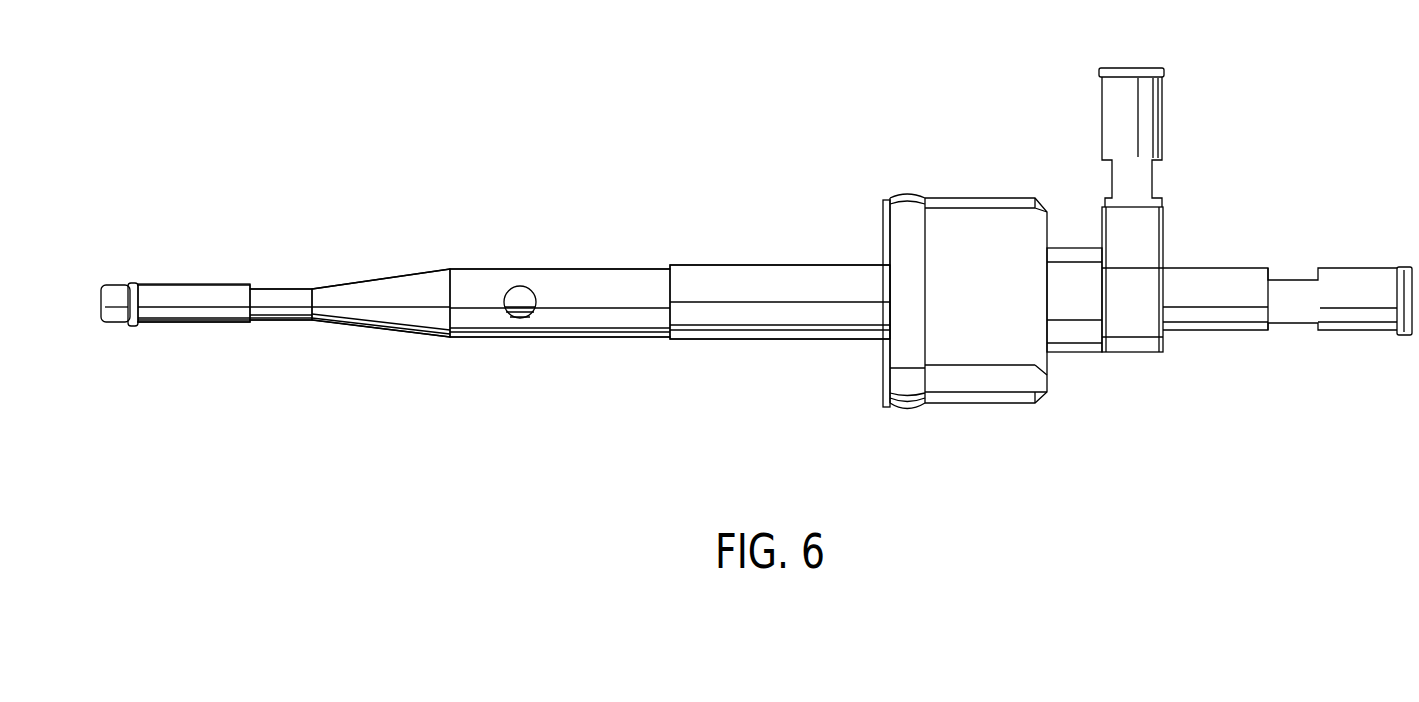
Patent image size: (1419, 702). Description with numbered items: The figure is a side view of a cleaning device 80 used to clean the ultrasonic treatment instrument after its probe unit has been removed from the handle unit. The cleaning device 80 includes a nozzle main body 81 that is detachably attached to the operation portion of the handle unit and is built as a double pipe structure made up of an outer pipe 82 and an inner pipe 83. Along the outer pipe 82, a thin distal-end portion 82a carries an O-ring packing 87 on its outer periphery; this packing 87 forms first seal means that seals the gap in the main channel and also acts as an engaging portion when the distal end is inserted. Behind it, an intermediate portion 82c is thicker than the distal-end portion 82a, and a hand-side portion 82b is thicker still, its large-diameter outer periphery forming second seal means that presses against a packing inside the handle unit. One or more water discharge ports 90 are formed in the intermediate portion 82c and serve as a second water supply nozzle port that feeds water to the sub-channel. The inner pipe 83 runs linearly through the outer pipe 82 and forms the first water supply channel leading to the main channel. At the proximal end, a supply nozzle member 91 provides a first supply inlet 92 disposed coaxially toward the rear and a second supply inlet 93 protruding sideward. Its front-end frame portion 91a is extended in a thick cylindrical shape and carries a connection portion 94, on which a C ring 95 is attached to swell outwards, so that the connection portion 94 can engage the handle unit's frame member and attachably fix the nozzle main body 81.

The cleaning device 80 is at (832, 127).
The nozzle main body 81 is at (553, 382).
The outer pipe 82 is at (408, 334).
The distal-end portion 82a is at (202, 320).
The hand-side portion 82b is at (710, 339).
The intermediate portion 82c is at (631, 275).
The inner pipe 83 is at (520, 318).
The packing 87 is at (132, 283).
The water discharge port 90 is at (521, 286).
The supply nozzle member 91 is at (1077, 345).
The front-end frame portion 91a is at (1006, 205).
The first supply inlet 92 is at (1352, 326).
The second supply inlet 93 is at (1150, 107).
The connection portion 94 is at (905, 192).
The C ring 95 is at (900, 382).